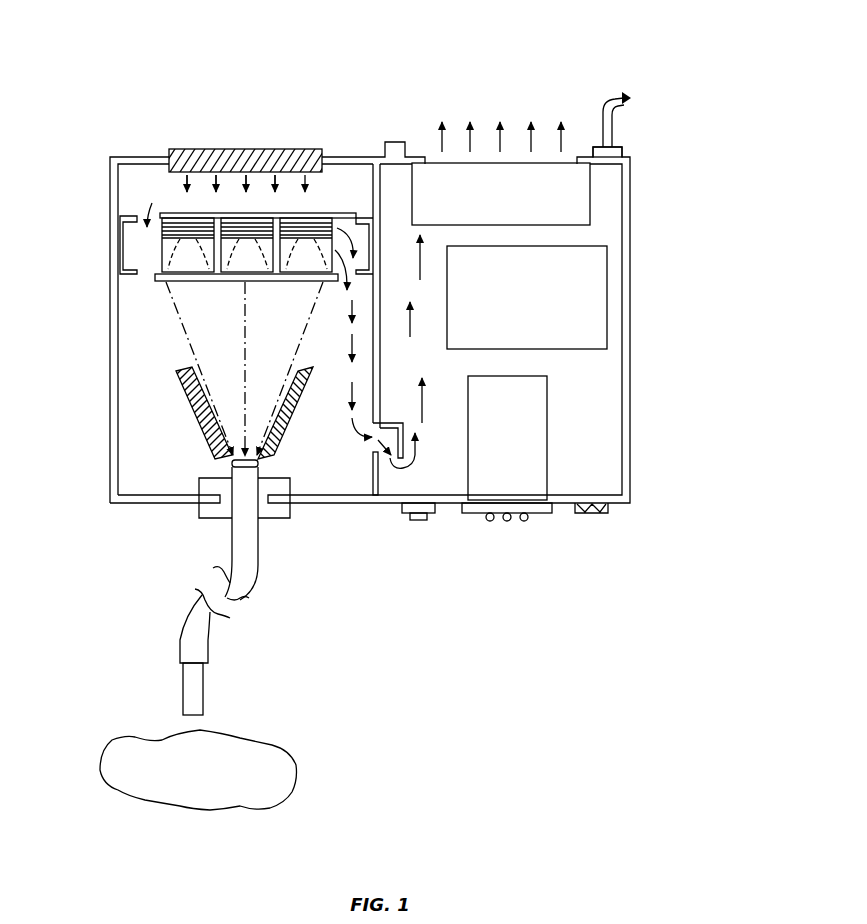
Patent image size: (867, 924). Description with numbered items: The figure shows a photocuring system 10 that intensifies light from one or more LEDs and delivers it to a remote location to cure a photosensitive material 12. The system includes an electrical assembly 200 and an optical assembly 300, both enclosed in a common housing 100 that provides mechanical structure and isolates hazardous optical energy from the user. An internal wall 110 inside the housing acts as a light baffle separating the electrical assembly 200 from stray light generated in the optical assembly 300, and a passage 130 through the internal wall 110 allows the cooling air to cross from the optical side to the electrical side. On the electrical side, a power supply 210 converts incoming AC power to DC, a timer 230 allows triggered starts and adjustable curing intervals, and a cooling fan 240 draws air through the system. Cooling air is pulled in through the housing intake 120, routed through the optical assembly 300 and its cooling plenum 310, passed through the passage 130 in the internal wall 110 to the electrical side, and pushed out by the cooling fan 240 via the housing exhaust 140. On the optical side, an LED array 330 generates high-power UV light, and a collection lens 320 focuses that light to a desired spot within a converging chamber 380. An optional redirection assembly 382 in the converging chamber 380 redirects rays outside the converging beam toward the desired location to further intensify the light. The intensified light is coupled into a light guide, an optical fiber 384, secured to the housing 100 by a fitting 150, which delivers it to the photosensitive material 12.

The photocuring system 10 is at (512, 612).
The photosensitive material 12 is at (290, 757).
The housing 100 is at (630, 255).
The internal wall 110 is at (380, 369).
The housing intake 120 is at (198, 148).
The louver / air passage 130 is at (365, 443).
The housing exhaust 140 is at (568, 157).
The fitting 150 is at (270, 519).
The electrical assembly 200 is at (517, 82).
The power supply 210 is at (610, 313).
The timer 230 is at (547, 428).
The cooling fan 240 is at (437, 173).
The optical assembly 300 is at (257, 82).
The cooling plenum 310 is at (137, 257).
The collection lens 320 is at (157, 279).
The LED array 330 is at (160, 250).
The converging chamber 380 is at (170, 474).
The redirection assembly 382 is at (200, 416).
The optical fiber 384 is at (180, 638).